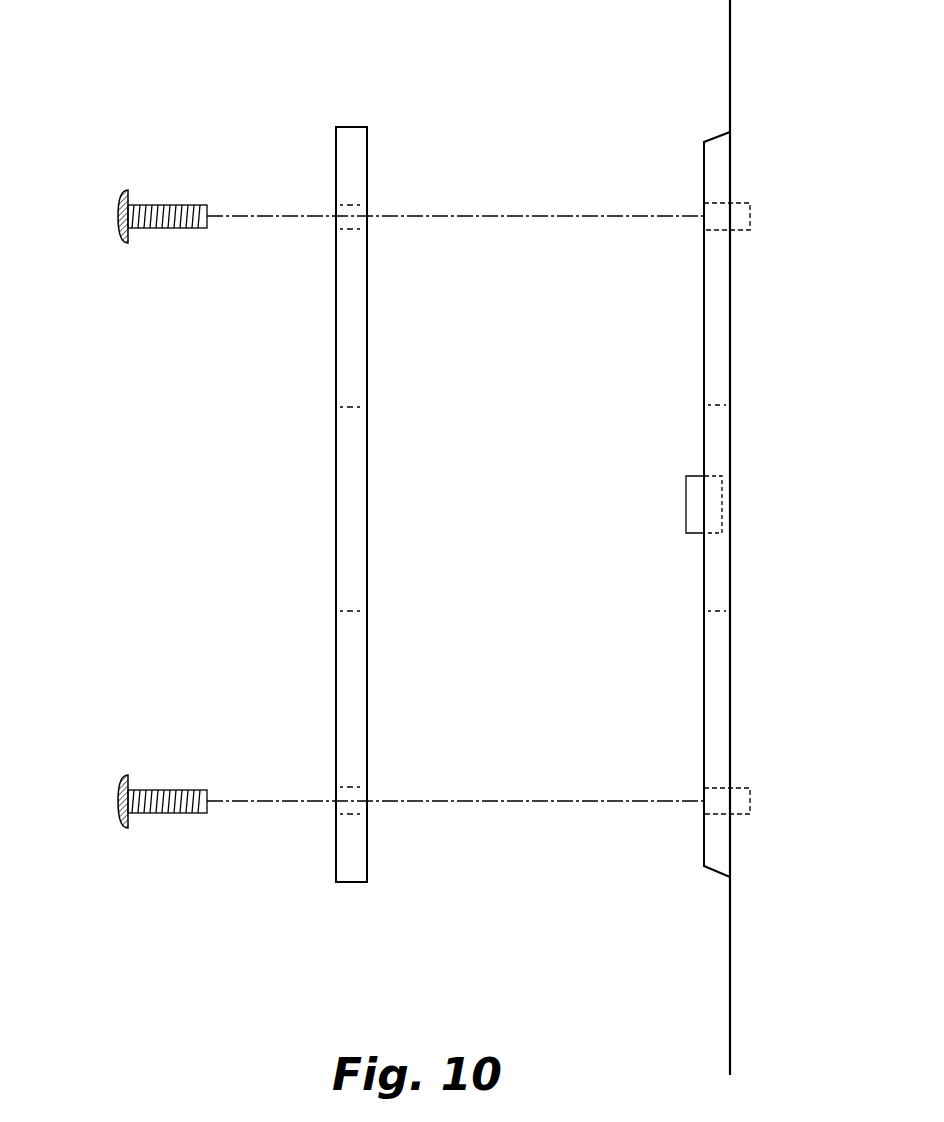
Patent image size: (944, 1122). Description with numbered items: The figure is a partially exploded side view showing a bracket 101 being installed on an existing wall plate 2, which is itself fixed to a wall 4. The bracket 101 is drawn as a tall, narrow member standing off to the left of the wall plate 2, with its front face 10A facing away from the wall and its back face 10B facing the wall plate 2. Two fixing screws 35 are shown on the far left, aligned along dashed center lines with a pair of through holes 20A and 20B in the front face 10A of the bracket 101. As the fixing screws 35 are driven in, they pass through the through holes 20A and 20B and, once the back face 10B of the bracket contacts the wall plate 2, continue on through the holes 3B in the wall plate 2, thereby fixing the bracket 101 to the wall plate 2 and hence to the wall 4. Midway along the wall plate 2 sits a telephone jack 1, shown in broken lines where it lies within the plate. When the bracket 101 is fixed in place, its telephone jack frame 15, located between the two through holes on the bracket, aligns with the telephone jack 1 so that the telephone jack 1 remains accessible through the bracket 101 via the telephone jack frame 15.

The bracket 101 is at (369, 488).
The front face 10A is at (336, 348).
The back face 10B is at (370, 733).
The telephone jack frame 15 is at (335, 513).
The through hole 20A is at (336, 215).
The through hole 20B is at (336, 808).
The fixing screw 35 is at (115, 217).
The wall plate 2 is at (710, 135).
The hole 3B is at (752, 215).
The telephone jack 1 is at (686, 507).
The wall 4 is at (836, 494).